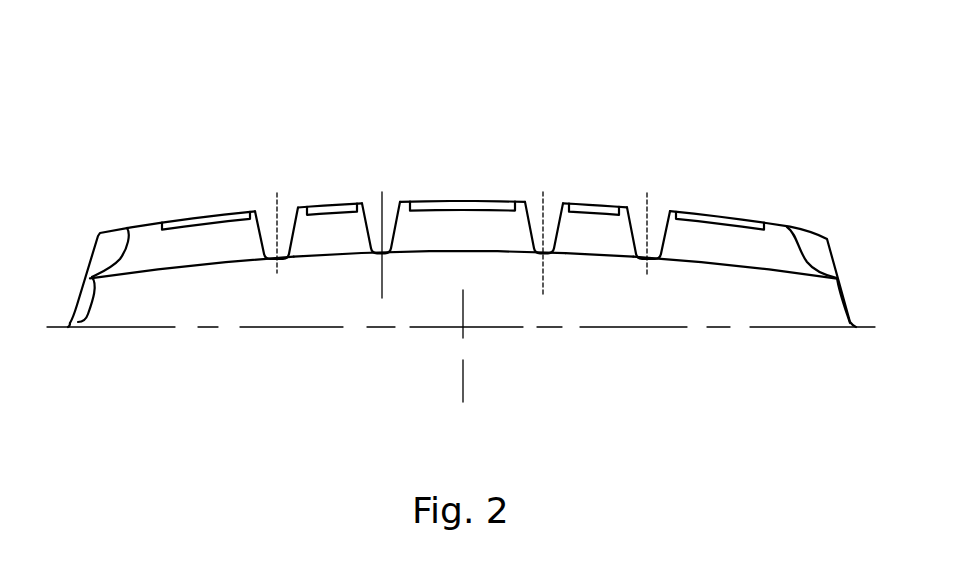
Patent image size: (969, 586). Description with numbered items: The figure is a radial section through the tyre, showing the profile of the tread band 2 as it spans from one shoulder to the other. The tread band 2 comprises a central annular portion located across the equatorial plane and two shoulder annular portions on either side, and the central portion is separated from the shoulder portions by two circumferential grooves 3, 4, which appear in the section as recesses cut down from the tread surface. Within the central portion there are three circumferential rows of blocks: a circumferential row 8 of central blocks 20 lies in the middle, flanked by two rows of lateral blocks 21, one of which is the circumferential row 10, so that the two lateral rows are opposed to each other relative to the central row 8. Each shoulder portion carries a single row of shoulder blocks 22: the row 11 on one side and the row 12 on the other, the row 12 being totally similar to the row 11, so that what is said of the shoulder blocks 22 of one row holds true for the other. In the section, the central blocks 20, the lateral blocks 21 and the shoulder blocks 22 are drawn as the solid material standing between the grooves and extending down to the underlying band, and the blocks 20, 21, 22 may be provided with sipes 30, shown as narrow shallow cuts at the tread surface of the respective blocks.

The tread band 2 is at (806, 204).
The circumferential groove 3 is at (268, 210).
The circumferential groove 4 is at (639, 205).
The circumferential row of central blocks 8 is at (525, 183).
The circumferential row of lateral blocks 10 is at (560, 183).
The row of shoulder blocks 11 is at (151, 201).
The row of shoulder blocks 12 is at (777, 200).
The central block 20 is at (427, 240).
The lateral block 21 is at (330, 240).
The shoulder block 22 is at (163, 248).
The sipe 30 is at (197, 210).